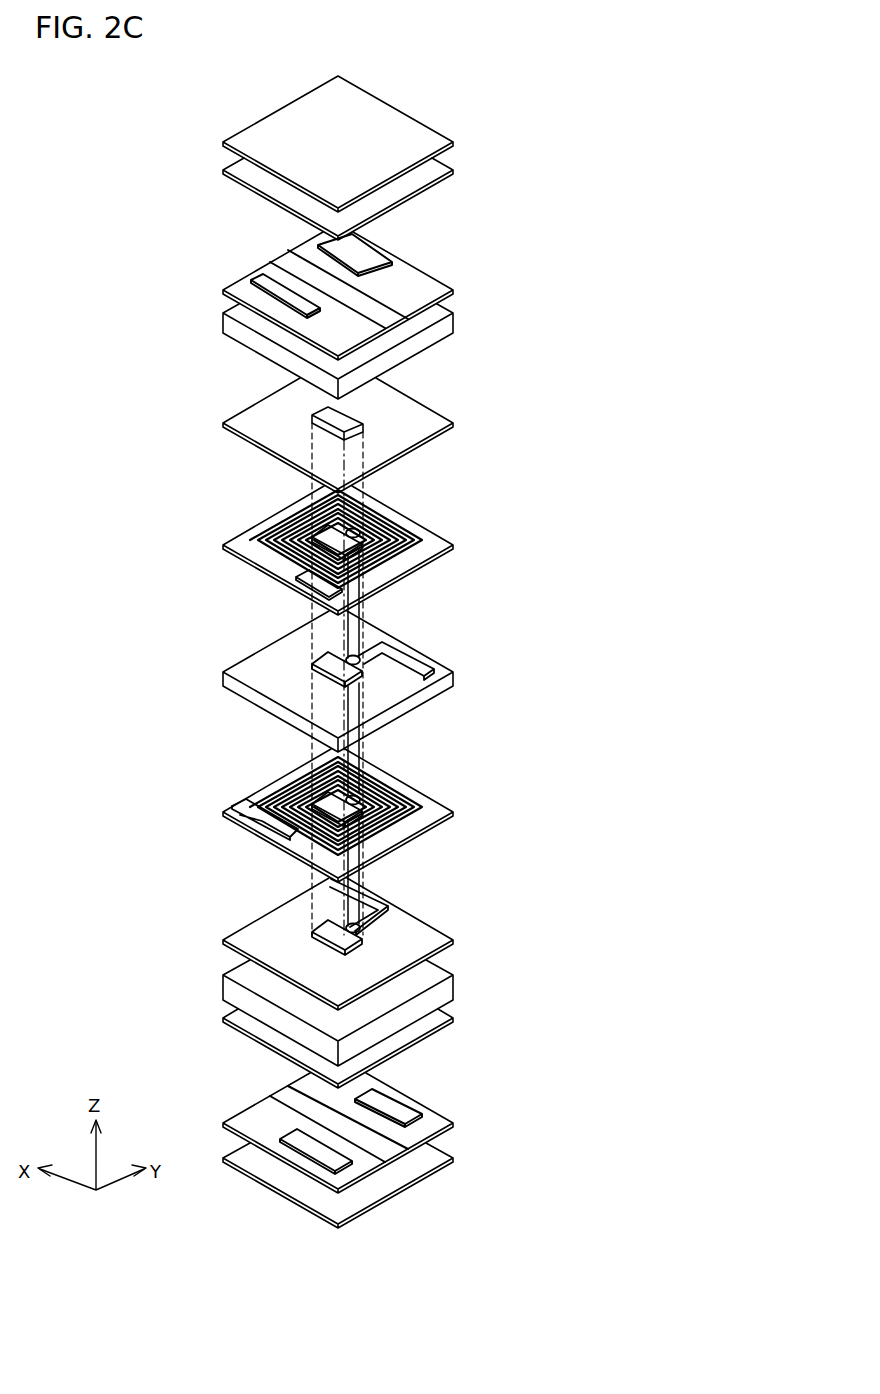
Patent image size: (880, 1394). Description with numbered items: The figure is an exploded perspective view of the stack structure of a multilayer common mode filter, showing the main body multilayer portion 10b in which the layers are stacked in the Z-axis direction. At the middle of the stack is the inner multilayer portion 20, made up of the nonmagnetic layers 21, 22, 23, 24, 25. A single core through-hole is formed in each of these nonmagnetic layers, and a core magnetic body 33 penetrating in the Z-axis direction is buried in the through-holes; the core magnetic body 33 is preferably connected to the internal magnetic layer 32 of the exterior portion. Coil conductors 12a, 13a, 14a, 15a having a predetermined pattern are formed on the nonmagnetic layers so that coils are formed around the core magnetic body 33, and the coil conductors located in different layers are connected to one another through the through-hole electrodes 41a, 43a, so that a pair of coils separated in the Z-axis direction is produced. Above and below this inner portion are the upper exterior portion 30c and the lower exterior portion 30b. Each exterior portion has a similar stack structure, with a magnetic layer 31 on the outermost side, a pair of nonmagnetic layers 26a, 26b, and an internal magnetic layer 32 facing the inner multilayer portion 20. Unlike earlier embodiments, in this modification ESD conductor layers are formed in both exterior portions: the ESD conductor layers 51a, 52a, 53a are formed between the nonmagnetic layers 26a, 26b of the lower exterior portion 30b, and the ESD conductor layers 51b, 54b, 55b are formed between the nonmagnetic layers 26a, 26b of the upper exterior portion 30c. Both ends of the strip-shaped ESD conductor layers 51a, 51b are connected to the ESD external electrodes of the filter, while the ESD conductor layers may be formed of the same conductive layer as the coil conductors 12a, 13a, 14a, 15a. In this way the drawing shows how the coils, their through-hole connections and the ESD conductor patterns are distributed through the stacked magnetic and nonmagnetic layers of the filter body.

The main body multilayer portion 10b is at (146, 266).
The inner multilayer portion of nonmagnetic layers 20 is at (527, 950).
The nonmagnetic layer 21 is at (418, 933).
The nonmagnetic layer 22 is at (453, 806).
The nonmagnetic layer 23 is at (453, 680).
The nonmagnetic layer 24 is at (453, 541).
The nonmagnetic layer 25 is at (453, 419).
The nonmagnetic layer 26a is at (453, 286).
The nonmagnetic layer 26b is at (453, 166).
The lower exterior portion 30b is at (538, 975).
The upper exterior portion 30c is at (542, 122).
The magnetic layer 31 is at (453, 138).
The internal magnetic layer 32 is at (453, 323).
The core magnetic body 33 is at (323, 412).
The coil conductor 12a is at (397, 646).
The coil conductor 13a is at (278, 515).
The coil conductor 14a is at (378, 907).
The coil conductor 15a is at (280, 782).
The through-hole electrode 41a is at (344, 918).
The through-hole electrode 43a is at (346, 645).
The ESD conductor layer 51a is at (282, 1095).
The ESD conductor layer 52a is at (397, 1112).
The ESD conductor layer 53a is at (303, 1147).
The ESD conductor layer 51b is at (286, 262).
The ESD conductor layer 54b is at (368, 258).
The ESD conductor layer 55b is at (250, 284).